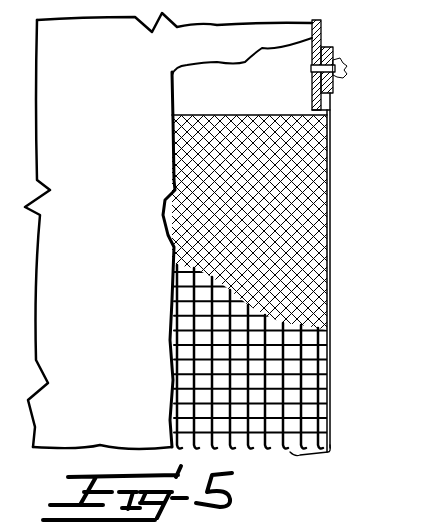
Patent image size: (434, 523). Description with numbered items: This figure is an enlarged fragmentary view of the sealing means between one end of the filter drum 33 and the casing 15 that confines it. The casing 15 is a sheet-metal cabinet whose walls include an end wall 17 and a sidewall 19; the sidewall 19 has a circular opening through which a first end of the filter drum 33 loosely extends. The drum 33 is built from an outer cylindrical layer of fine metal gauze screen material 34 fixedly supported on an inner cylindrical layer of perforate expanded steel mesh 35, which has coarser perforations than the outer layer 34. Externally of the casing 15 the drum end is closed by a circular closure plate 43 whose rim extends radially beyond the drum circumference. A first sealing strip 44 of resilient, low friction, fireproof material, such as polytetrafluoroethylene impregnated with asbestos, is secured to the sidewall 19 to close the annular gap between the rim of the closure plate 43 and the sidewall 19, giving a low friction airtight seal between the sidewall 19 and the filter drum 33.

The casing 15 is at (353, 237).
The end wall 17 is at (122, 118).
The sidewall 19 is at (320, 28).
The filter drum 33 is at (167, 307).
The outer cylindrical layer of screen material 34 is at (187, 185).
The inner cylindrical layer of perforate material 35 is at (172, 385).
The closure plate 43 is at (332, 198).
The first sealing strip 44 is at (327, 97).